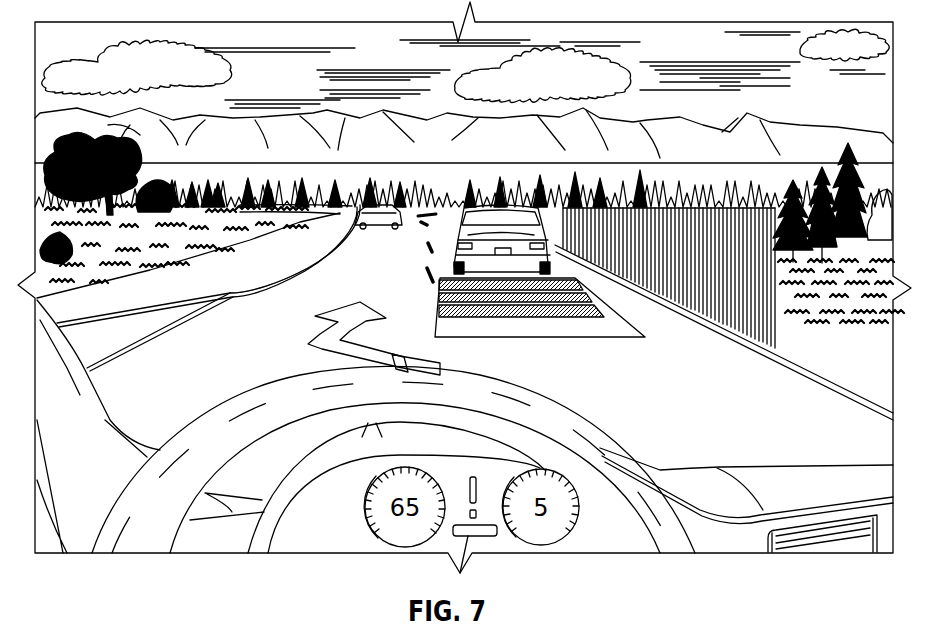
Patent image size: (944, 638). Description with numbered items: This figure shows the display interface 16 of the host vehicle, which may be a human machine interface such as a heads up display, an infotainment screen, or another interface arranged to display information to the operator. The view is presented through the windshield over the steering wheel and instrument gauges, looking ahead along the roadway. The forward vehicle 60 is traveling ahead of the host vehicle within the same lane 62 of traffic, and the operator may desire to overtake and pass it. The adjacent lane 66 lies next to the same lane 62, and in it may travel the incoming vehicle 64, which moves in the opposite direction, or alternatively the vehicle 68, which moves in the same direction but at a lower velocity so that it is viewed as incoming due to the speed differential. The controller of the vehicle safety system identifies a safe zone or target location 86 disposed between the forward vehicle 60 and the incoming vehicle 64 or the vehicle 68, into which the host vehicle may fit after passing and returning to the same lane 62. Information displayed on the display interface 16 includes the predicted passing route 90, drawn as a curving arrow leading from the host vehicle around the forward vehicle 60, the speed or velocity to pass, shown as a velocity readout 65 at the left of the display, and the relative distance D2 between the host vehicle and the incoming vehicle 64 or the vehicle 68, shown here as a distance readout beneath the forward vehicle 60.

The display interface 16 is at (727, 403).
The forward vehicle 60 is at (448, 233).
The same lane 62 is at (797, 403).
The incoming vehicle 64 is at (358, 216).
The vehicle 68 is at (300, 207).
The adjacent lane 66 is at (320, 287).
The target location 86 is at (429, 222).
The predicted passing route 90 is at (343, 322).
The velocity display 65 is at (180, 392).
The relative distance D2 is at (588, 373).